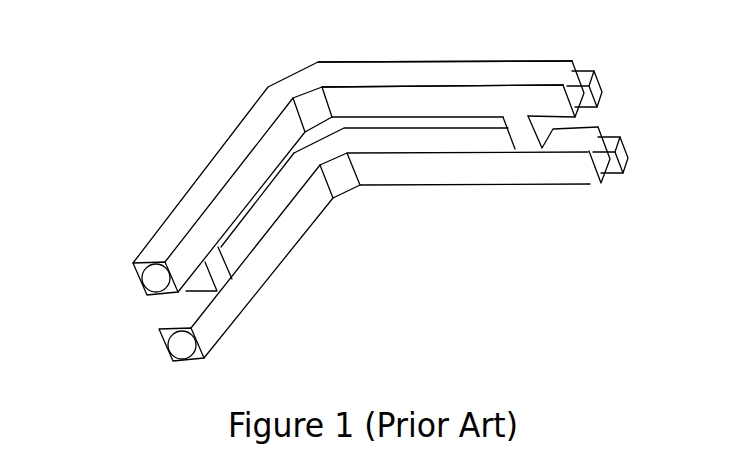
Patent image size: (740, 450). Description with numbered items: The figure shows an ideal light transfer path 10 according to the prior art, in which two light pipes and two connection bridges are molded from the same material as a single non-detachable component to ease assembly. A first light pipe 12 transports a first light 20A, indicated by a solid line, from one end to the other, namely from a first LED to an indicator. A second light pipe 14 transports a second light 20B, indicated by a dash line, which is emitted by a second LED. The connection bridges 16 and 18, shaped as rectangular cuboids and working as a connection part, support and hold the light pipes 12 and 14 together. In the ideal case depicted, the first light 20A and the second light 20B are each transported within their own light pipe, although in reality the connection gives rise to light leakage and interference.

The ideal light transfer path 10 is at (172, 40).
The first light pipe 12 is at (444, 172).
The second light pipe 14 is at (377, 103).
The connection bridge 16 is at (222, 282).
The connection bridge 18 is at (525, 133).
The first light 20A is at (668, 152).
The second light 20B is at (642, 85).